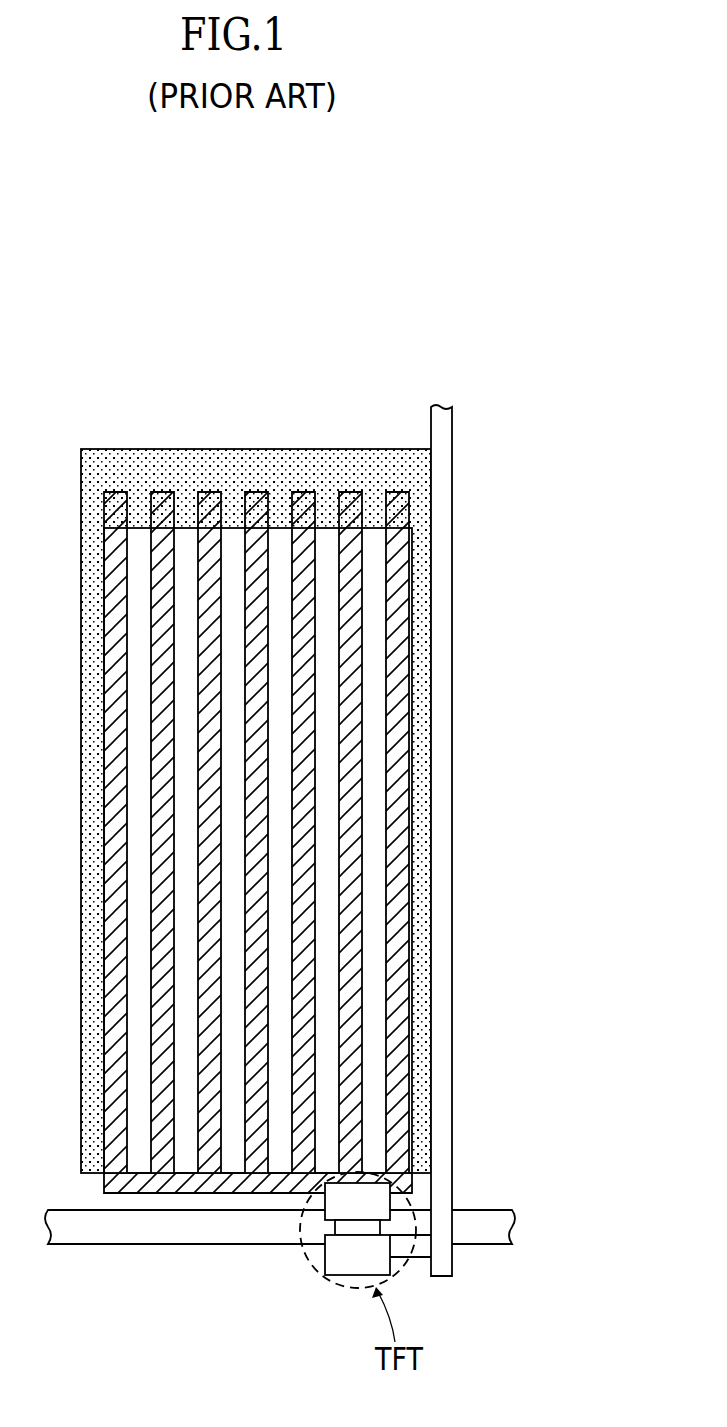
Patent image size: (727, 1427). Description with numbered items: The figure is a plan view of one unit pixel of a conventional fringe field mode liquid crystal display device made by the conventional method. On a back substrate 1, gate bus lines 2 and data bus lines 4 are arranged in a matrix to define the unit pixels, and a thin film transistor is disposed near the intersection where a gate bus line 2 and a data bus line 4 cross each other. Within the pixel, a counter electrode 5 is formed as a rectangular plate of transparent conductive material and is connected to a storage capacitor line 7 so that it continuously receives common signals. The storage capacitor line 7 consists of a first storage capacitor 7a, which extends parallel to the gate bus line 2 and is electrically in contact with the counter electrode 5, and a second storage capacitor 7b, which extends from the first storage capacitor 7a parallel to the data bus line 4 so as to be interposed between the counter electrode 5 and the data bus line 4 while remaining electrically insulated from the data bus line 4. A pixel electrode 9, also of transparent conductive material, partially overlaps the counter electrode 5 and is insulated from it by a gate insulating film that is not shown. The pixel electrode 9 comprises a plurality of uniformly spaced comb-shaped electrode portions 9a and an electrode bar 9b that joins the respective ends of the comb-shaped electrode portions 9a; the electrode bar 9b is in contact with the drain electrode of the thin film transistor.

The back substrate 1 is at (208, 1293).
The gate bus line 2 is at (512, 1223).
The data bus line 4 is at (443, 1187).
The counter electrode 5 is at (332, 990).
The storage capacitor line 7 is at (342, 811).
The first storage capacitor 7a is at (392, 473).
The second storage capacitor 7b is at (420, 553).
The pixel electrode 9 is at (440, 1180).
The comb-shaped electrode portions 9a is at (400, 1085).
The electrode bar 9b is at (378, 1178).